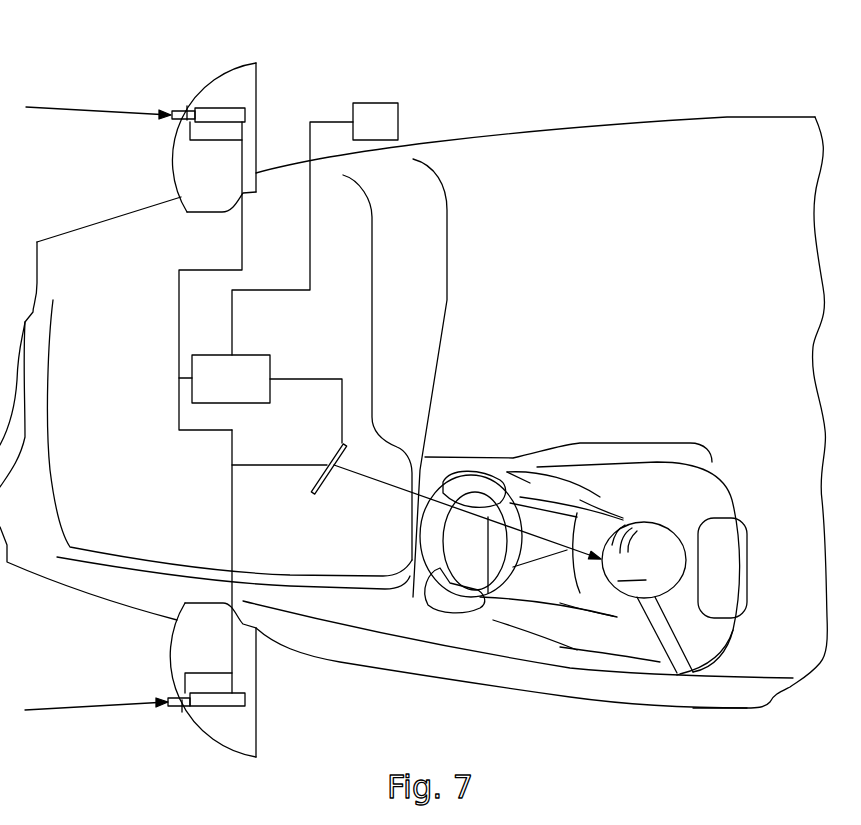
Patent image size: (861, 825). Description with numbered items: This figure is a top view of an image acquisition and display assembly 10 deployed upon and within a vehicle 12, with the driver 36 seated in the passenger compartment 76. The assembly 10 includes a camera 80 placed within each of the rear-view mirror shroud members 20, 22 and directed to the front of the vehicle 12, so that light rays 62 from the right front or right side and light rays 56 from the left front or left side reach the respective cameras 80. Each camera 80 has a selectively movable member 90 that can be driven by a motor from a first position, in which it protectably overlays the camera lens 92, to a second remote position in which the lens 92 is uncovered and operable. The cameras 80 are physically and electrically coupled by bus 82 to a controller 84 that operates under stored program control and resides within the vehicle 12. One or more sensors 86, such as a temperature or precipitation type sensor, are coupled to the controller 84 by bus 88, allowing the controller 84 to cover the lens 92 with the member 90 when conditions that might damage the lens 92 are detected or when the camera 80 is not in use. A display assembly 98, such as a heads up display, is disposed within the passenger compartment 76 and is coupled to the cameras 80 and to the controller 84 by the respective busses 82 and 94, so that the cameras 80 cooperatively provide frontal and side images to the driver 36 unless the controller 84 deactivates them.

The image acquisition and display assembly 10 is at (589, 321).
The vehicle 12 is at (657, 707).
The rear-view mirror shroud 20 is at (196, 186).
The rear-view mirror shroud 22 is at (187, 662).
The driver 36 is at (690, 507).
The light rays 56 is at (65, 711).
The light rays 62 is at (108, 110).
The passenger compartment 76 is at (763, 594).
The camera 80 is at (245, 115).
The bus 82 is at (232, 497).
The controller 84 is at (217, 394).
The sensor 86 is at (361, 135).
The bus 88 is at (232, 333).
The selectively movable member 90 is at (165, 112).
The camera lens 92 is at (187, 110).
The bus 94 is at (342, 408).
The display assembly 98 is at (323, 487).